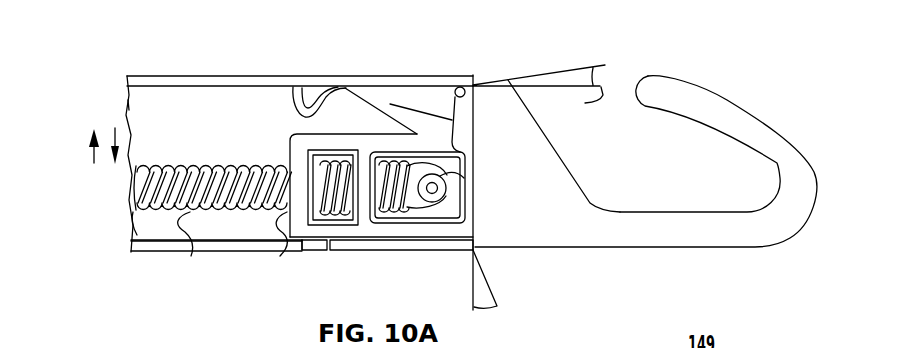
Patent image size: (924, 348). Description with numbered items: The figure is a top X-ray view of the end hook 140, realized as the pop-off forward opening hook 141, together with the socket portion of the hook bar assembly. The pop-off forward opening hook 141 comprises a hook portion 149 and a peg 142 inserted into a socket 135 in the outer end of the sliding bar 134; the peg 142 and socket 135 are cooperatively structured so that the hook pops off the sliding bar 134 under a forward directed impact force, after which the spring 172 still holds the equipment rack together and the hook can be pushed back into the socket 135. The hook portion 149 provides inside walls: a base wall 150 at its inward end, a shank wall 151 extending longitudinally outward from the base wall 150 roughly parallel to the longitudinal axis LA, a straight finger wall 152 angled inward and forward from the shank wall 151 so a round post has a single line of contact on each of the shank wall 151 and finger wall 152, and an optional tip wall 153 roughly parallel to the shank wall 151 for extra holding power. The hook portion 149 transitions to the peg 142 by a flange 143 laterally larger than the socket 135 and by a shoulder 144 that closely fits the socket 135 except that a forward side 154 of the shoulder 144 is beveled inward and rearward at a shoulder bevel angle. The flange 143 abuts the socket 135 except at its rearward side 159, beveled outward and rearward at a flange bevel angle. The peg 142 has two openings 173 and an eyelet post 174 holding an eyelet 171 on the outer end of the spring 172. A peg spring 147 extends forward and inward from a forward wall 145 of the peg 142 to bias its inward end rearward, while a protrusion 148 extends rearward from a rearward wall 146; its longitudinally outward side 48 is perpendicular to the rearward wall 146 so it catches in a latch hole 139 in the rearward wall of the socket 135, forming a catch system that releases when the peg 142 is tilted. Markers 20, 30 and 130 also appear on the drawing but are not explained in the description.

The section line 20 is at (94, 163).
The handle wall 30 is at (130, 136).
The longitudinally outward side 48 is at (313, 250).
The surgical handle 130 is at (112, 95).
The sliding bar 134 is at (182, 78).
The socket 135 is at (457, 88).
The latch hole 139 is at (316, 244).
The end hook 140 is at (770, 88).
The pop-off forward opening hook 141 is at (682, 60).
The peg 142 is at (273, 157).
The flange 143 is at (475, 137).
The shoulder 144 is at (450, 100).
The forward wall 145 is at (293, 130).
The rearward wall 146 is at (352, 232).
The peg spring 147 is at (293, 88).
The protrusion 148 is at (318, 245).
The hook portion 149 is at (722, 70).
The base wall 150 is at (560, 157).
The shank wall 151 is at (705, 212).
The finger wall 152 is at (730, 142).
The tip wall 153 is at (660, 113).
The forward side 154 is at (454, 88).
The rearward side 159 is at (480, 248).
The eyelet 171 is at (450, 200).
The spring 172 is at (195, 241).
The openings 173 is at (363, 166).
The eyelet post 174 is at (463, 178).